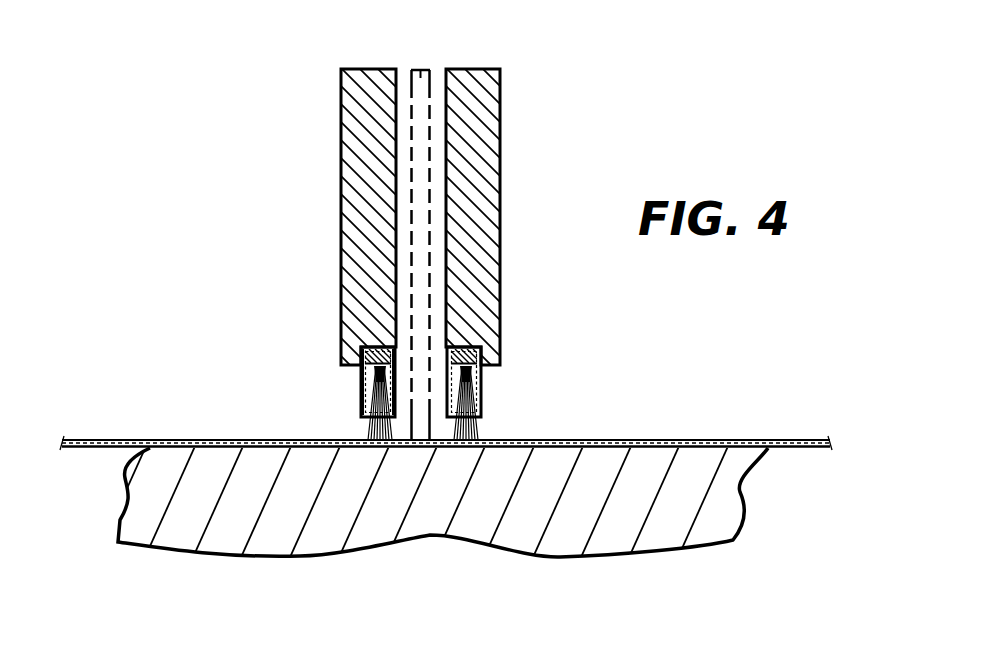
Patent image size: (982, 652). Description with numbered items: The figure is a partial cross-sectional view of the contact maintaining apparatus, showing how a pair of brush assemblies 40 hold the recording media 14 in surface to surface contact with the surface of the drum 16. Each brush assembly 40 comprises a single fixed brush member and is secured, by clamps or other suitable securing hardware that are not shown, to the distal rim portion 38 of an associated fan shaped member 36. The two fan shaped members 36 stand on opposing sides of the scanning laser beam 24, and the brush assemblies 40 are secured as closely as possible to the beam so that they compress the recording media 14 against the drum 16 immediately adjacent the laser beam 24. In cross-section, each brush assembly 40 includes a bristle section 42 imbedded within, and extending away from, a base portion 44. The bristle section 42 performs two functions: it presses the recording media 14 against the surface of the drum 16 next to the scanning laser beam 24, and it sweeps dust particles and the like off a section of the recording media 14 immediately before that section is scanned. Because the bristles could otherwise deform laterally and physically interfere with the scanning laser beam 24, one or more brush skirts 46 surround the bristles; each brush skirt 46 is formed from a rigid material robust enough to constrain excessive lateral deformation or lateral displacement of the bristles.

The recording media 14 is at (781, 441).
The drum 16 is at (636, 504).
The scanning laser beam 24 is at (420, 68).
The fan shaped member 36 is at (352, 163).
The distal rim portion 38 is at (499, 372).
The brush assembly 40 is at (522, 386).
The bristle section 42 is at (475, 436).
The base portion 44 is at (473, 342).
The brush skirt 46 is at (375, 391).